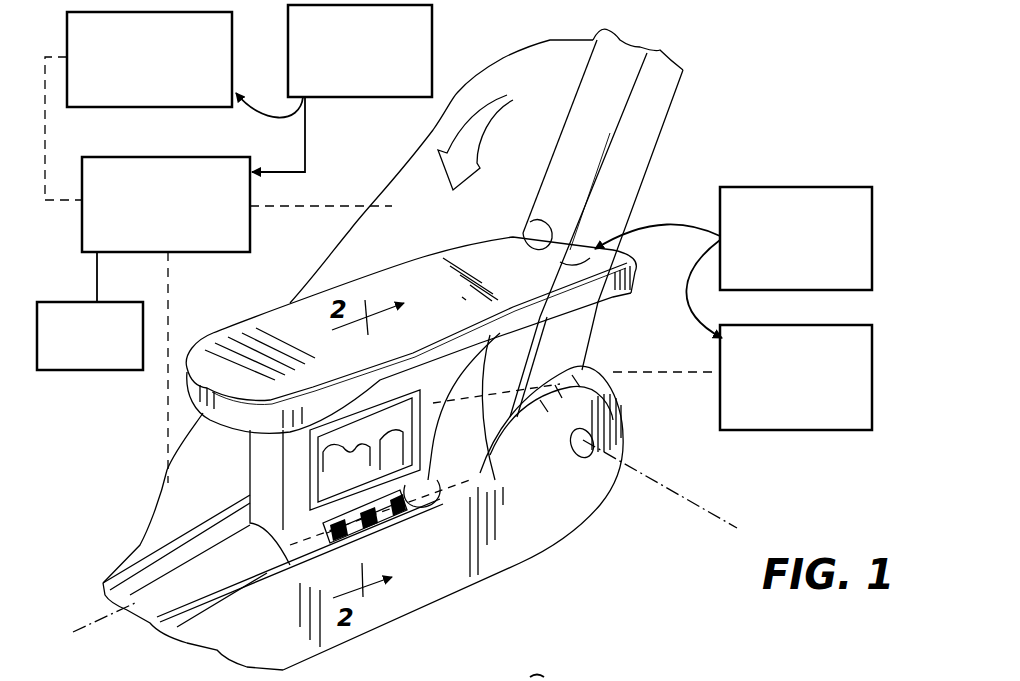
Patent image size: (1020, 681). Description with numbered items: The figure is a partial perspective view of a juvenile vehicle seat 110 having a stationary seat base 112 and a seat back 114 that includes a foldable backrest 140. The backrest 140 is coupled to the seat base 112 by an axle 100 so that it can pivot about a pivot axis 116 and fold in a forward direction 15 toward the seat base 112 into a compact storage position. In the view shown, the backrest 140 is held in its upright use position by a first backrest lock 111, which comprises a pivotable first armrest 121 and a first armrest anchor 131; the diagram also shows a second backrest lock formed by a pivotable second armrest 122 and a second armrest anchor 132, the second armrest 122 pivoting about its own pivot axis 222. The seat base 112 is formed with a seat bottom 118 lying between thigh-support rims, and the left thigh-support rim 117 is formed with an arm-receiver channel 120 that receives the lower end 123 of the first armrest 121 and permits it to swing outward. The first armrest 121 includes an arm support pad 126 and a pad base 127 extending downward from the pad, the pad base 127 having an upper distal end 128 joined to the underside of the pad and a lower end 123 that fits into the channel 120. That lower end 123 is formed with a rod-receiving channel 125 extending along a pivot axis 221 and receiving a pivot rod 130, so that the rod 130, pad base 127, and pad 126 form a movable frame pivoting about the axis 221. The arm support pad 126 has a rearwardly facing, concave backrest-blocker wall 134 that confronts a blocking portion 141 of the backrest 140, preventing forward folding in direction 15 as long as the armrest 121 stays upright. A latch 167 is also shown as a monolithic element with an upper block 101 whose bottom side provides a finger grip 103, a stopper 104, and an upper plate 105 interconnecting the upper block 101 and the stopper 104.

The axle 100 is at (584, 456).
The upper block 101 is at (349, 448).
The finger grip 103 is at (326, 445).
The stopper 104 is at (410, 440).
The upper plate 105 is at (323, 535).
The juvenile vehicle seat 110 is at (678, 106).
The first backrest lock 111 is at (795, 188).
The seat base 112 is at (432, 42).
The seat back 114 is at (406, 160).
The pivot axis 116 is at (737, 528).
The left thigh-support rim 117 is at (178, 558).
The seat bottom 118 is at (187, 505).
The arm-receiver channel 120 is at (265, 582).
The first armrest 121 is at (393, 262).
The second armrest 122 is at (250, 225).
The lower end 123 is at (420, 493).
The rod-receiving channel 125 is at (372, 512).
The arm support pad 126 is at (262, 335).
The pad base 127 is at (296, 491).
The upper distal end 128 is at (385, 437).
The pivot rod 130 is at (398, 512).
The first armrest anchor 131 is at (807, 430).
The second armrest anchor 132 is at (130, 108).
The backrest-blocker wall 134 is at (527, 222).
The foldable backrest 140 is at (633, 160).
The blocking portion 141 is at (578, 257).
The forward direction 15 is at (483, 128).
The latch 167 is at (318, 446).
The pivot axis 221 is at (98, 613).
The pivot axis 222 is at (100, 370).